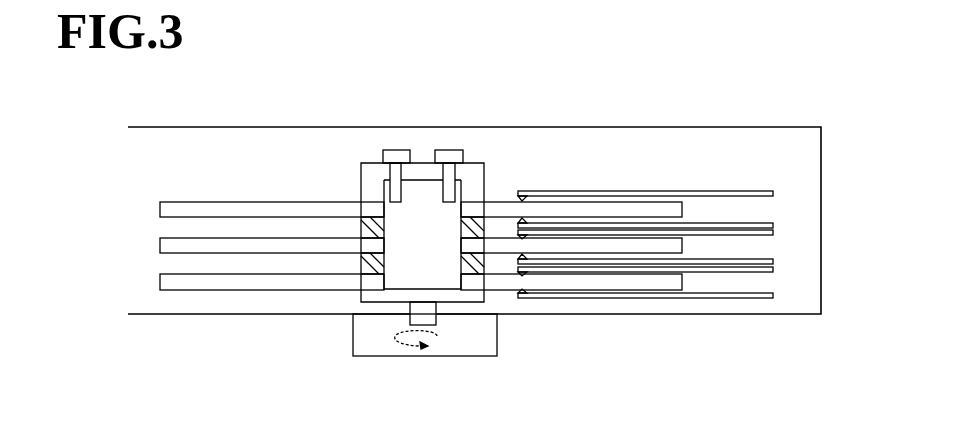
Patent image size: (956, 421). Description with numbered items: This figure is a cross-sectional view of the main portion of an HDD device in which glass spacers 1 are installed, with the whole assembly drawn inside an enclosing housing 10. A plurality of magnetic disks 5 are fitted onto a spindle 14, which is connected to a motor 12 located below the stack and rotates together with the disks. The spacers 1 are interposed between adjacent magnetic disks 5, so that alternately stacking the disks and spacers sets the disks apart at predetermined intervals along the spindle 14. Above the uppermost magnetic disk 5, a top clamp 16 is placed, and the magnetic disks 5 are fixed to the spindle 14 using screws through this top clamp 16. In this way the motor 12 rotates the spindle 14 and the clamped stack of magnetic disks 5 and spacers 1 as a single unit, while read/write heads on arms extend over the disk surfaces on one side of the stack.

The spacer 1 is at (367, 243).
The magnetic disk 5 is at (297, 283).
The housing 10 is at (785, 127).
The motor 12 is at (480, 338).
The spindle 14 is at (425, 190).
The top clamp 16 is at (418, 173).